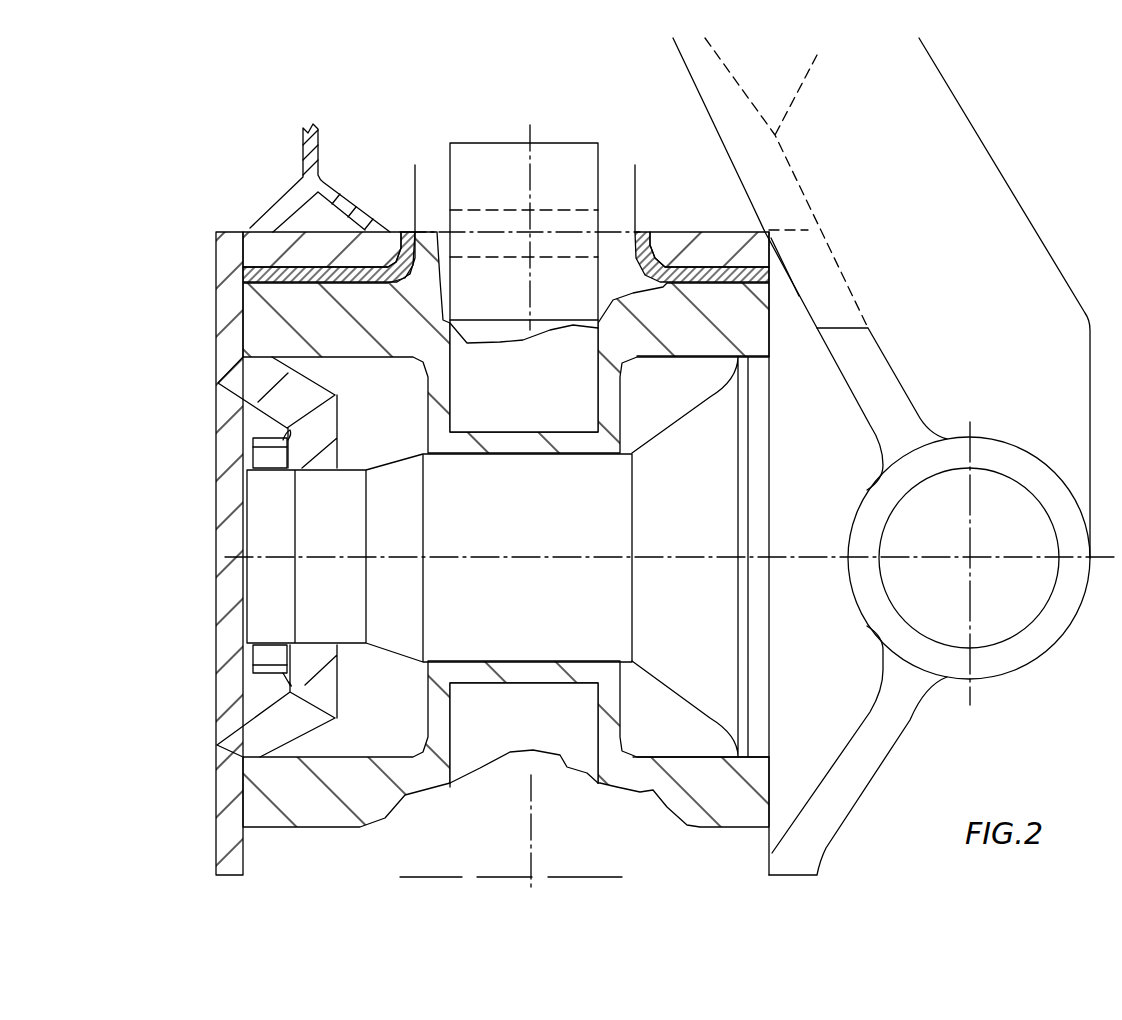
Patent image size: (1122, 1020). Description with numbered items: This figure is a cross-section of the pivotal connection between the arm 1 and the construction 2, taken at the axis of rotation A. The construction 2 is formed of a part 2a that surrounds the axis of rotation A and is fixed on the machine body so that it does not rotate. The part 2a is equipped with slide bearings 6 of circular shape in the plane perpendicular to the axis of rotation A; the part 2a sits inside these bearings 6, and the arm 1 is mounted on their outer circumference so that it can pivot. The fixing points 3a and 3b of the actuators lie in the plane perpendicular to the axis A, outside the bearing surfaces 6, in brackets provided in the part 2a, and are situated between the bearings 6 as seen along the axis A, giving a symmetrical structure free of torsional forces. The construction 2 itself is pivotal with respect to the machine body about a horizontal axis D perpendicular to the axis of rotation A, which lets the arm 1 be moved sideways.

The arm 1 is at (280, 245).
The construction 2 is at (803, 757).
The part surrounding the axis of rotation 2a is at (273, 320).
The fixing point of actuator 3a is at (533, 877).
The fixing point of actuator 3b is at (533, 213).
The slide bearings 6 is at (243, 277).
The axis of rotation A is at (702, 548).
The horizontal axis D is at (970, 560).